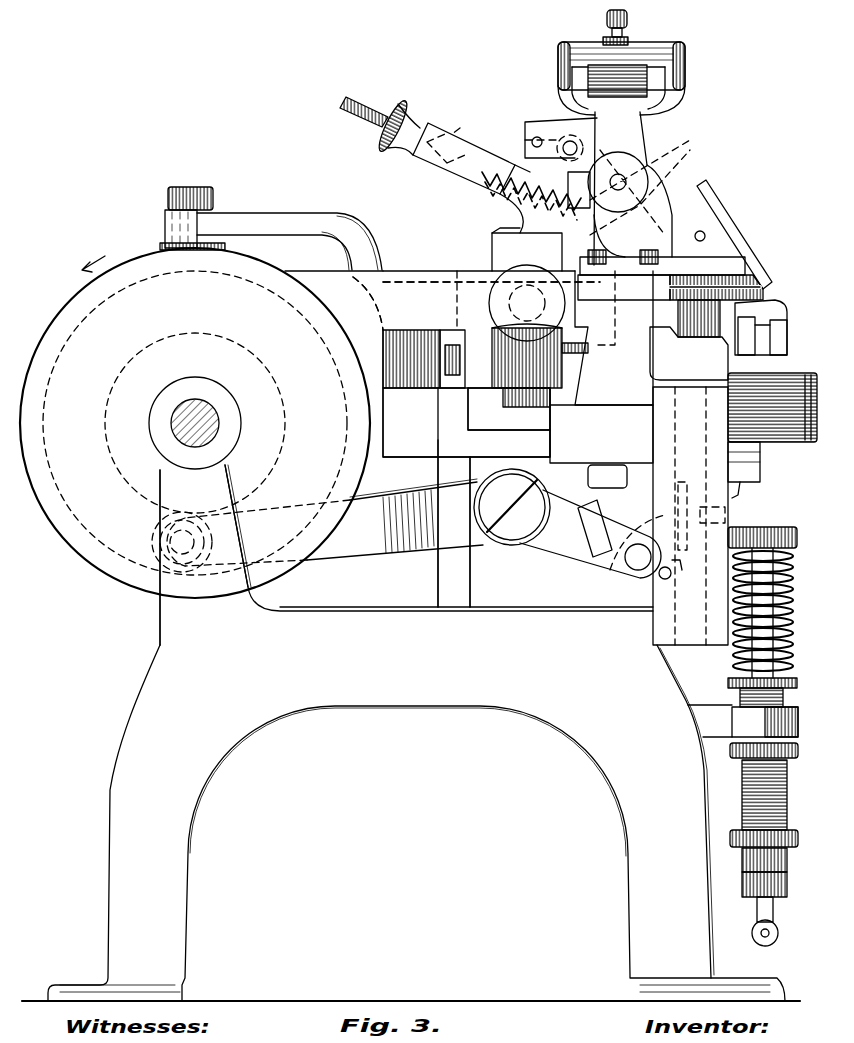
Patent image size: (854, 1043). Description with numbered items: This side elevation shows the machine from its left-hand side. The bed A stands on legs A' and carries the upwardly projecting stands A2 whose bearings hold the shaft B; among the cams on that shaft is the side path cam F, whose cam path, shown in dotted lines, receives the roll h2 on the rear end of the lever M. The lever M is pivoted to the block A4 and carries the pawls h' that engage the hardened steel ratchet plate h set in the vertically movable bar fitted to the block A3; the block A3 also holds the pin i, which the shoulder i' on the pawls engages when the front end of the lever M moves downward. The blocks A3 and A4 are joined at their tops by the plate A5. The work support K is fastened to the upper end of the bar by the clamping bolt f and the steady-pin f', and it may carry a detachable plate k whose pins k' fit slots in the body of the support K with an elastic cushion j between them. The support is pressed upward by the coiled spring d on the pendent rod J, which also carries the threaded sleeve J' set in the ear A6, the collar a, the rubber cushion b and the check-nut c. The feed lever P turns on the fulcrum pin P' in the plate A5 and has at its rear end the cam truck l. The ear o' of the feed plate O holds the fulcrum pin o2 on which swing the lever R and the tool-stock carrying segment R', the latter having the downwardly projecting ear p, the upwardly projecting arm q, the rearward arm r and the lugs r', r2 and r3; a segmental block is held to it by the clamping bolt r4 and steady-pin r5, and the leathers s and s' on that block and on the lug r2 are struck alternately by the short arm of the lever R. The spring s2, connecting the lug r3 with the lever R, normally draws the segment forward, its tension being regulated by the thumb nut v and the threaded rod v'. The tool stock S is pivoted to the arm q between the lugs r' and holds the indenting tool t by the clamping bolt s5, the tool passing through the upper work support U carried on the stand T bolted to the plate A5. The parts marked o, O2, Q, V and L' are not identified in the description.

The bed A is at (406, 458).
The legs A' is at (416, 823).
The upwardly projecting stands A2 is at (183, 503).
The upwardly projecting block A3 is at (672, 447).
The upwardly projecting block A4 is at (442, 580).
The plate A5 is at (468, 447).
The ear A6 is at (743, 707).
The side path cam F is at (245, 328).
The shaft B is at (205, 428).
The roll h2 is at (160, 534).
The feed lever P is at (312, 287).
The vertical fulcrum pin P' is at (491, 266).
The cam truck l is at (162, 246).
The lever R is at (356, 303).
The downwardly projecting ear p is at (528, 272).
The fulcrum pin o2 is at (522, 292).
The bore o is at (522, 307).
The cylinder O2 is at (527, 365).
The ear of the feed plate o' is at (576, 337).
The block Q is at (575, 353).
The feed plate O is at (509, 409).
The stand T is at (601, 379).
The upwardly projecting arm q is at (600, 58).
The tool stock S is at (620, 188).
The leather s is at (639, 176).
The leather s' is at (662, 201).
The laterally projecting lugs r' is at (627, 188).
The laterally projecting lug r2 is at (648, 226).
The indenting tool t is at (712, 205).
The clamping bolt s5 is at (710, 242).
The upper work support or table U is at (670, 275).
The block V is at (760, 298).
The work support K is at (790, 345).
The detachable plate k is at (746, 327).
The pins or lugs k' is at (771, 337).
The cushion j is at (787, 322).
The stud or clamping bolt f is at (780, 407).
The steady-pin f' is at (742, 495).
The lever M is at (340, 535).
The pawl h' is at (667, 536).
The ratchet plate h is at (689, 511).
The shoulder i' is at (683, 561).
The pin i is at (664, 584).
The block L' is at (762, 538).
The pendent rod J is at (771, 611).
The coiled spring d is at (793, 640).
The check-nut c is at (771, 750).
The threaded sleeve J' is at (774, 795).
The rubber cushion b is at (764, 851).
The collar a is at (764, 909).
The rearwardly and upwardly projecting arm r is at (464, 158).
The laterally projecting lug r3 is at (460, 128).
The thumb nut v is at (397, 124).
The threaded rod v' is at (364, 107).
The tool-stock carrying segment R' is at (523, 199).
The spring s2 is at (498, 202).
The steady-pin r5 is at (537, 137).
The clamping bolt r4 is at (570, 141).